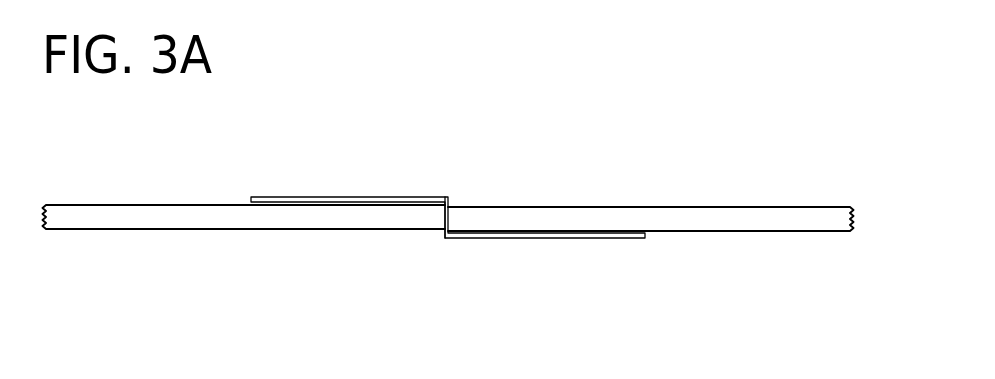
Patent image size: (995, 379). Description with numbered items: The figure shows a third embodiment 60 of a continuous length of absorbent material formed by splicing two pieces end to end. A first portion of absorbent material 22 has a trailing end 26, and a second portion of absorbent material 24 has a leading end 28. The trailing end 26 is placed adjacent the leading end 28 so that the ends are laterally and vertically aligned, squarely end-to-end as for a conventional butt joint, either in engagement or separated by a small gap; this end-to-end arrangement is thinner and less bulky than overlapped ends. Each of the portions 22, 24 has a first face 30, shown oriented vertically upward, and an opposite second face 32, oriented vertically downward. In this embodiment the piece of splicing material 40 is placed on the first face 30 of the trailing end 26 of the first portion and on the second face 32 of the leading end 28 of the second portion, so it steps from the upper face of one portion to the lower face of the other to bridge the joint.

The first portion of absorbent material 22 is at (123, 194).
The second portion of absorbent material 24 is at (784, 196).
The trailing end 26 is at (365, 229).
The leading end 28 is at (533, 231).
The first face 30 is at (215, 205).
The second face 32 is at (203, 229).
The piece of splicing material 40 is at (363, 197).
The third embodiment of a continuous length of absorbent material 60 is at (482, 161).